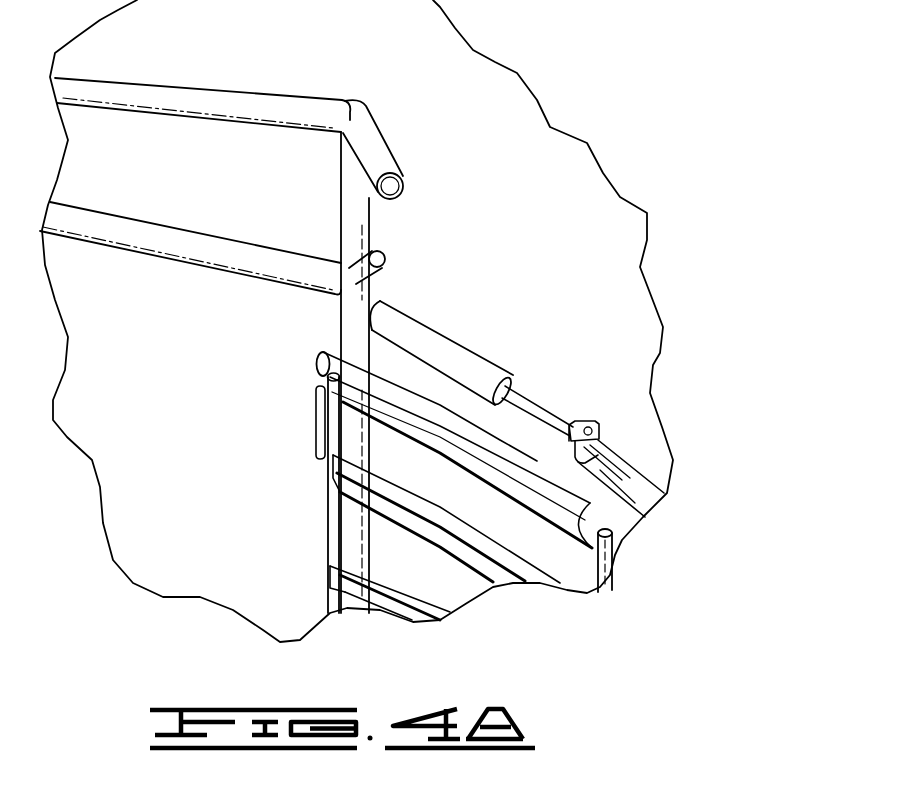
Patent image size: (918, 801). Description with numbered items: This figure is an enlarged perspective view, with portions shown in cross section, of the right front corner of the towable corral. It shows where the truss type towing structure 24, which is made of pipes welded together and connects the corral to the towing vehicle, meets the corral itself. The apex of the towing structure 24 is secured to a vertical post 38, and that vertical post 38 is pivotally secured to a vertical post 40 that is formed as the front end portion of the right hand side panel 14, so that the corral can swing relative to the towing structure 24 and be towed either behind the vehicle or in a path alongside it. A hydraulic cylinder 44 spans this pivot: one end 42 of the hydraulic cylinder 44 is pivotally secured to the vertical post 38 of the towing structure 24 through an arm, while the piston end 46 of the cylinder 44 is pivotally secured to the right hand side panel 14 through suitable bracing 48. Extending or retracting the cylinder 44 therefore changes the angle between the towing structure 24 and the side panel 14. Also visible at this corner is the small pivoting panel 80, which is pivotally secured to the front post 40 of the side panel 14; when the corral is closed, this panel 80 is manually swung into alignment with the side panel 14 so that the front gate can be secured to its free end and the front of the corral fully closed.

The right hand side panel 14 is at (583, 502).
The truss type structure 24 is at (295, 97).
The vertical post 38 is at (338, 316).
The vertical post 40 is at (345, 530).
The one end of hydraulic cylinder 42 is at (378, 298).
The hydraulic cylinder 44 is at (455, 340).
The piston end 46 is at (586, 422).
The bracing 48 is at (578, 455).
The small pivoting panel 80 is at (598, 535).